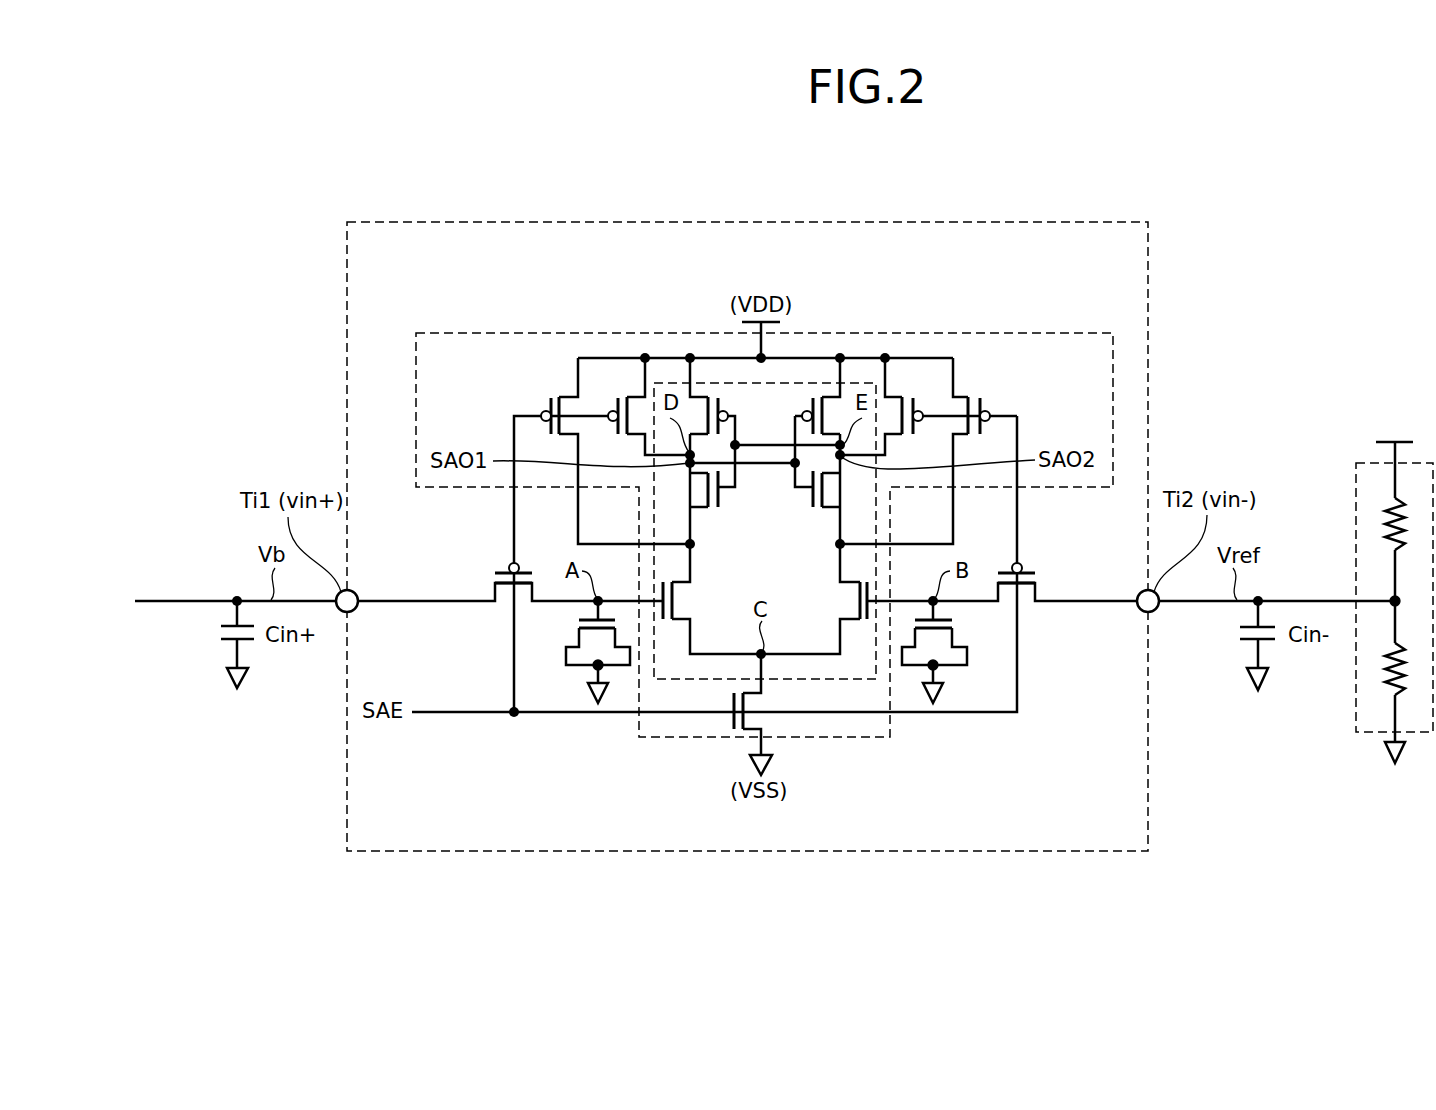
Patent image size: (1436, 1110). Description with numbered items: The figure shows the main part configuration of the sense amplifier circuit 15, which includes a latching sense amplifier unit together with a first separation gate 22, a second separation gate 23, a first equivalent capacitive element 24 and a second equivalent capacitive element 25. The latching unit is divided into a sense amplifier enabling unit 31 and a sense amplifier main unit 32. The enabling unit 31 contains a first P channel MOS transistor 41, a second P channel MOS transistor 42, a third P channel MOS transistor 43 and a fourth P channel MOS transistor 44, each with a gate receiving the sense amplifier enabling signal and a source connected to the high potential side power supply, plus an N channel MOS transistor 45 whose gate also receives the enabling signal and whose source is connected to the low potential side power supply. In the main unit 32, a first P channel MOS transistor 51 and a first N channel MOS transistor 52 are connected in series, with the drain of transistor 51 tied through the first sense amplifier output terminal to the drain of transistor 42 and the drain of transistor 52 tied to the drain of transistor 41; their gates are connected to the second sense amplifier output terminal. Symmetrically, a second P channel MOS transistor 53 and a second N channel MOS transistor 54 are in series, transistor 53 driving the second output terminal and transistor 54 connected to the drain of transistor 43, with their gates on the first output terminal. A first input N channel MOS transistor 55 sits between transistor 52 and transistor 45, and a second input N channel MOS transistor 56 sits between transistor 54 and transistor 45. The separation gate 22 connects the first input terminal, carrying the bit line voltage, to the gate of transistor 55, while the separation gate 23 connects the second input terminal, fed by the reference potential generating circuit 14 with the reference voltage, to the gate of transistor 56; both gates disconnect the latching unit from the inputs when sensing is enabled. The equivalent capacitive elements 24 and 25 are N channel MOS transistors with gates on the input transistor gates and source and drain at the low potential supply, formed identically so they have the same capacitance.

The reference potential generating circuit 14 is at (1372, 462).
The sense amplifier circuit 15 is at (1085, 222).
The first separation gate 22 is at (510, 564).
The second separation gate 23 is at (1022, 564).
The first equivalent capacitive element 24 is at (578, 633).
The second equivalent capacitive element 25 is at (953, 633).
The sense amplifier enabling unit 31 is at (1068, 333).
The sense amplifier main unit 32 is at (830, 680).
The first P channel MOS transistor 41 is at (568, 397).
The second P channel MOS transistor 42 is at (635, 397).
The third P channel MOS transistor 43 is at (892, 397).
The fourth P channel MOS transistor 44 is at (962, 397).
The N channel MOS transistor 45 is at (752, 731).
The first P channel MOS transistor 51 is at (697, 397).
The first N channel MOS transistor 52 is at (700, 511).
The second P channel MOS transistor 53 is at (832, 397).
The second N channel MOS transistor 54 is at (830, 511).
The first input N channel MOS transistor 55 is at (691, 600).
The second input N channel MOS transistor 56 is at (842, 613).